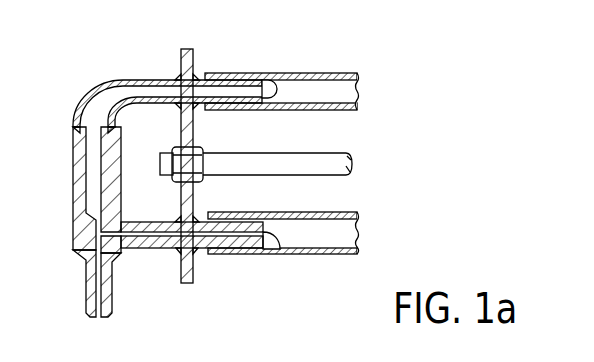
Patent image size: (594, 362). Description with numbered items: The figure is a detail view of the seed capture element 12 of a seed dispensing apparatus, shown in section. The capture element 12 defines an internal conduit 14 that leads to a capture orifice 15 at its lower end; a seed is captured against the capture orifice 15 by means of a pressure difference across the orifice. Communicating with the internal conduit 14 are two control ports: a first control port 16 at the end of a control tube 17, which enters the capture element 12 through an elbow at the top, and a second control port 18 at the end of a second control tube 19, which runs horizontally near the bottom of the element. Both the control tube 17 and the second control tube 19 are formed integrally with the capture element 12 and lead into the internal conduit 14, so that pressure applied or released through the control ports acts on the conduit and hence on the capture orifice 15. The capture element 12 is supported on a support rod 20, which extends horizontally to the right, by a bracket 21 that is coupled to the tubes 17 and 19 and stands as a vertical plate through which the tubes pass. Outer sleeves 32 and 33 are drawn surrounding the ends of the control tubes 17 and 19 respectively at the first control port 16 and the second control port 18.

The seed capture element 12 is at (155, 197).
The internal conduit 14 is at (86, 274).
The capture orifice 15 is at (97, 320).
The first control port 16 is at (270, 80).
The control tube 17 is at (112, 82).
The second control port 18 is at (278, 252).
The second control tube 19 is at (192, 268).
The support rod 20 is at (328, 160).
The bracket 21 is at (180, 60).
The upper sleeve tube 32 is at (325, 72).
The lower sleeve tube 33 is at (330, 256).